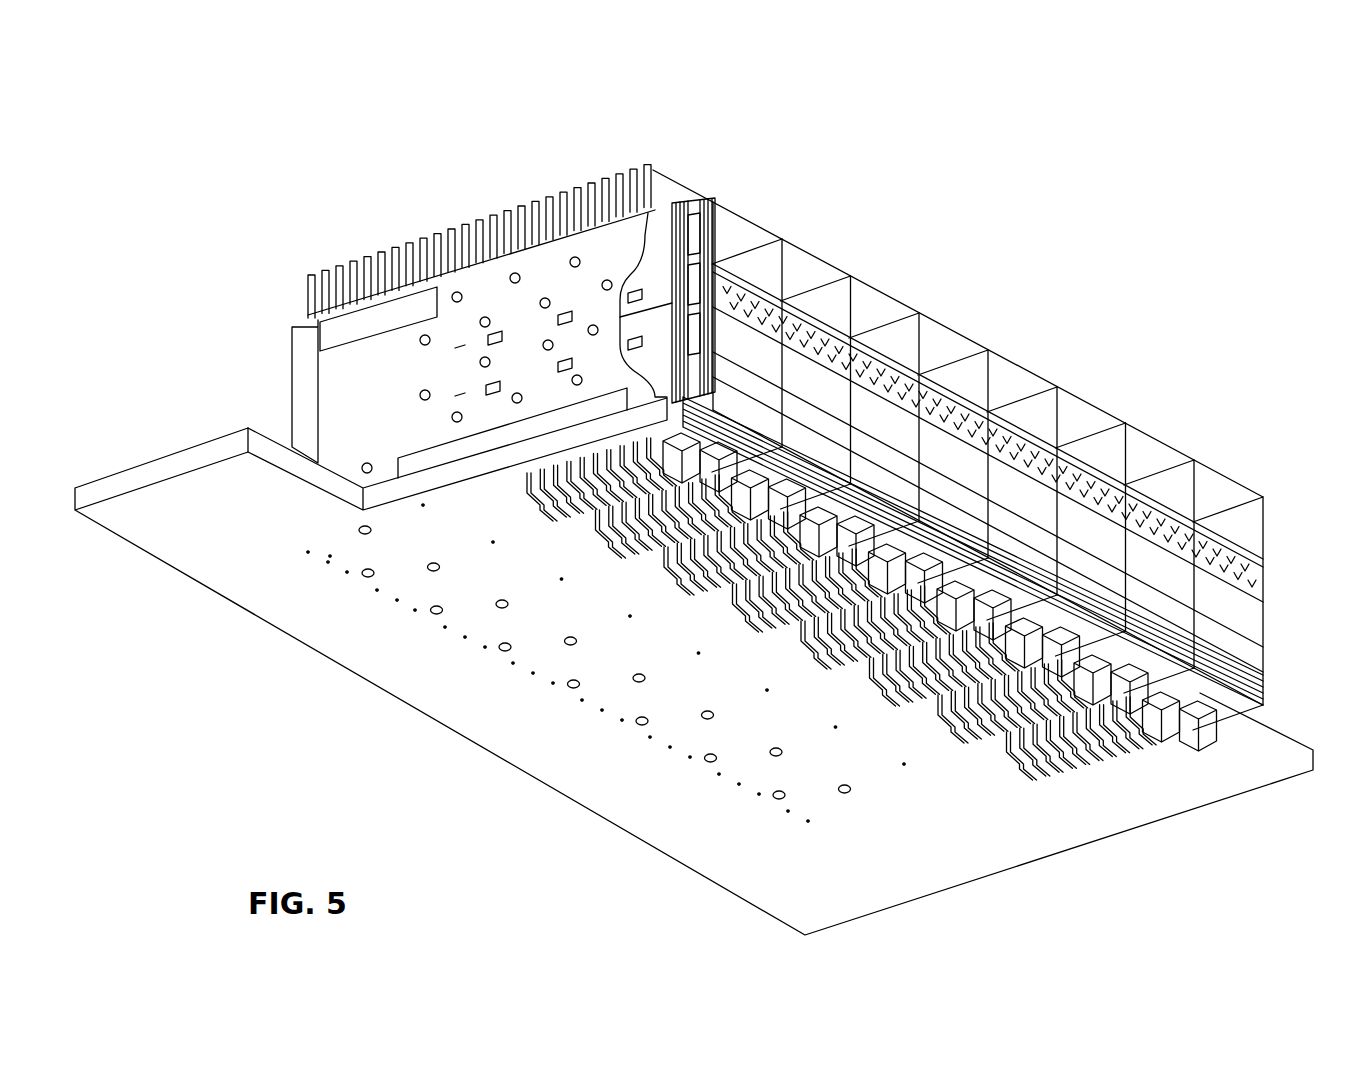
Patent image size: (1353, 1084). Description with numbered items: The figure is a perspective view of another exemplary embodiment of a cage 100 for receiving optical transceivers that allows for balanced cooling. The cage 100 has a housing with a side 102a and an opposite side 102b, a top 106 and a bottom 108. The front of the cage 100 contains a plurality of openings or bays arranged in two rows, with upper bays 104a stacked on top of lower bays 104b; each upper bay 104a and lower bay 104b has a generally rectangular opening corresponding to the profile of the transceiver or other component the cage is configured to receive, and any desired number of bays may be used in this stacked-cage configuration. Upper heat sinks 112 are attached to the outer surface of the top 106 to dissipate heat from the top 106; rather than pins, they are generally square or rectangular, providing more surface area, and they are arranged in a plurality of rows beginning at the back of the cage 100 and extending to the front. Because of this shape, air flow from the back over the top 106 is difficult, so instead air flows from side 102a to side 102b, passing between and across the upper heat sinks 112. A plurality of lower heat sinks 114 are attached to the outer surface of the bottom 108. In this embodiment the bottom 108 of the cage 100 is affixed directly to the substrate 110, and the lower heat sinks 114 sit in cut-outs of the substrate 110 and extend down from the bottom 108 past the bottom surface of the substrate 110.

The cage 100 is at (1134, 119).
The side 102a is at (355, 418).
The side 102b is at (1268, 603).
The upper bay 104a is at (740, 258).
The lower bay 104b is at (750, 382).
The top 106 is at (1035, 362).
The bottom 108 is at (1192, 686).
The substrate 110 is at (598, 748).
The upper heat sink 112 is at (538, 203).
The lower heat sink 114 is at (1055, 755).